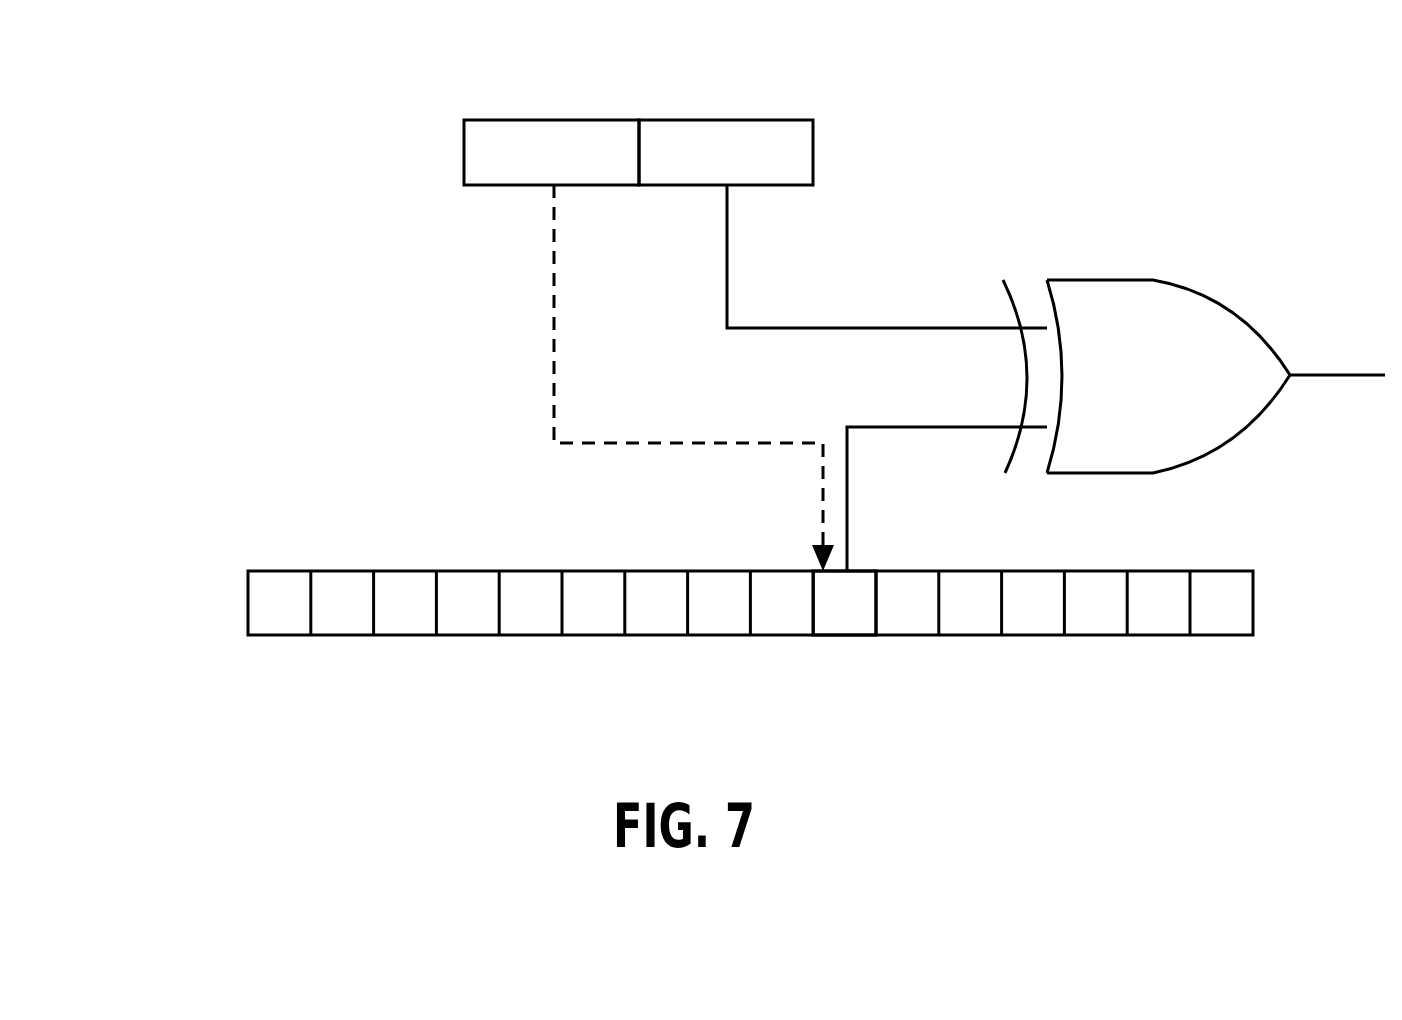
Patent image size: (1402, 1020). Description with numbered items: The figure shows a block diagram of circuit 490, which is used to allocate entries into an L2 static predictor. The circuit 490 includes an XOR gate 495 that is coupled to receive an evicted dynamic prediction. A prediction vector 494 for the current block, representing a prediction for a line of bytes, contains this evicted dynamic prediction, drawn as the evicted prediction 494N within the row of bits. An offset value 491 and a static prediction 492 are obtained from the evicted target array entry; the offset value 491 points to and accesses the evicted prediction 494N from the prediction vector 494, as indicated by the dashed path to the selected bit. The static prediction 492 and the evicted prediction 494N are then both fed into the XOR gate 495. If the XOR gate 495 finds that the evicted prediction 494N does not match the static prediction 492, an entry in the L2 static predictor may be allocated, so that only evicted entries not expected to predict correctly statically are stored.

The circuit 490 is at (1035, 160).
The offset value 491 is at (553, 120).
The static prediction 492 is at (724, 120).
The prediction vector 494 is at (168, 666).
The evicted prediction 494N is at (850, 571).
The XOR gate 495 is at (1150, 280).